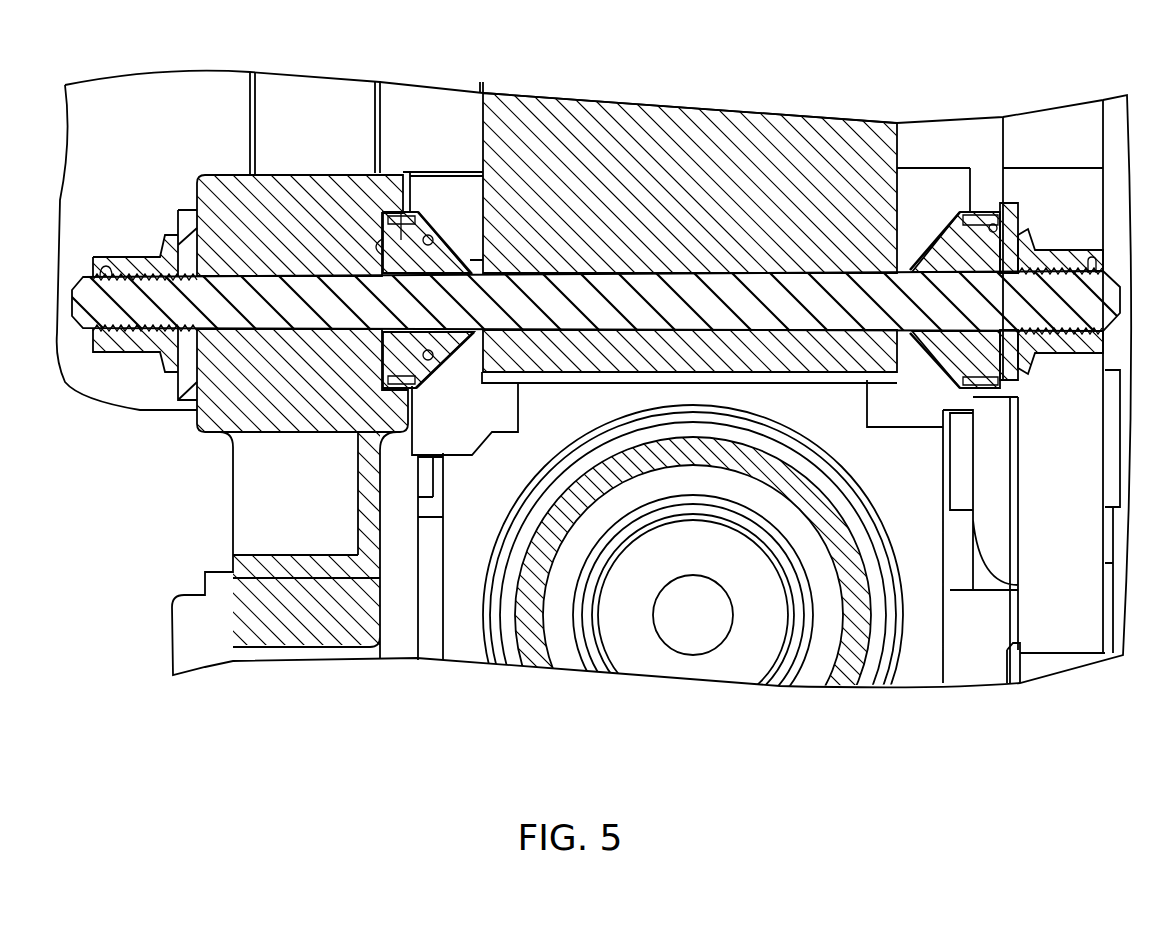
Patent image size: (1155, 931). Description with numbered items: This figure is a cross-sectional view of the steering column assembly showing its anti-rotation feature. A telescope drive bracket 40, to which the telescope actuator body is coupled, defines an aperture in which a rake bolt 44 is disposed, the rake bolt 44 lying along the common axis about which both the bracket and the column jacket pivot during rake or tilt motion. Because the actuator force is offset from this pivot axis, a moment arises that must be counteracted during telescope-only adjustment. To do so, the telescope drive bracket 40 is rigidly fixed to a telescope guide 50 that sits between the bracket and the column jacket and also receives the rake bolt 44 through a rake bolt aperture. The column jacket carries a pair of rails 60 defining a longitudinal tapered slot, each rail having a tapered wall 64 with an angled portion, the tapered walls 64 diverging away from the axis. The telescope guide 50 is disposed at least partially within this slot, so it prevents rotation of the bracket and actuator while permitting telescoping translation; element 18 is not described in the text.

The housing 18 is at (460, 643).
The telescope drive bracket 40 is at (242, 203).
The rake bolt 44 is at (248, 323).
The telescope guide 50 is at (400, 240).
The rails 60 is at (463, 205).
The tapered wall 64 is at (428, 237).